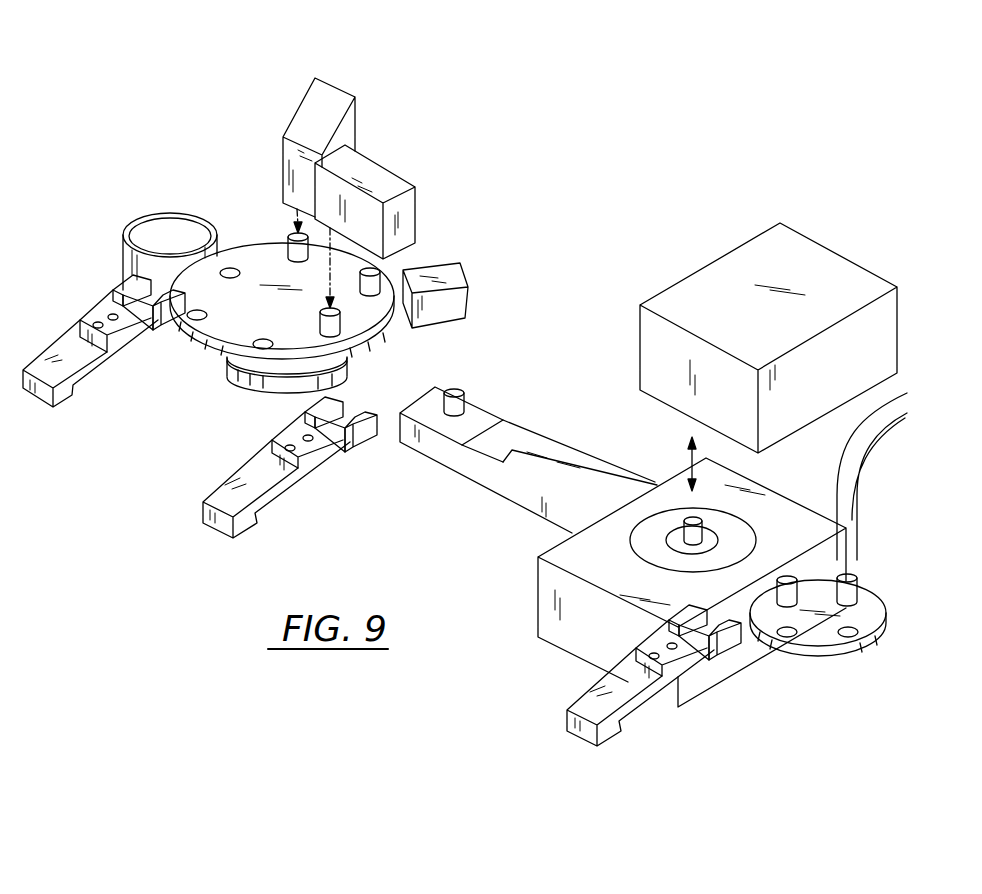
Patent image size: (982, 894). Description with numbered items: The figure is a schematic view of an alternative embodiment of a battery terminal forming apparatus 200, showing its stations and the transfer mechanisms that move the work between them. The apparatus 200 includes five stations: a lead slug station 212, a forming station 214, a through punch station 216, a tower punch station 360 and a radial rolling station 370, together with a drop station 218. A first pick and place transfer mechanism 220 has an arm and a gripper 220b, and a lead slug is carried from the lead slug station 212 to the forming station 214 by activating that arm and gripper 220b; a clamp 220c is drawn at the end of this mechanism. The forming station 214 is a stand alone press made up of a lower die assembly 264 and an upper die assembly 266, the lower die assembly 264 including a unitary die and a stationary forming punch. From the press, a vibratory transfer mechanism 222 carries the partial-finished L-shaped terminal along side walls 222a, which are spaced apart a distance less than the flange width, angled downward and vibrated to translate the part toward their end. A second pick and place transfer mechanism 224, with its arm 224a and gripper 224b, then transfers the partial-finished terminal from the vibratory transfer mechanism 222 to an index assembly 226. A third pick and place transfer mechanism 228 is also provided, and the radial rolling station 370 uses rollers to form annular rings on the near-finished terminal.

The battery terminal forming apparatus 200 is at (690, 80).
The lead slug station 212 is at (853, 663).
The forming station 214 is at (734, 346).
The through punch station 216 is at (378, 178).
The drop station 218 is at (155, 212).
The first pick and place transfer mechanism 220 is at (678, 710).
The gripper 220b is at (621, 716).
The arm clamp 220c is at (735, 645).
The vibratory transfer mechanism 222 is at (528, 460).
The side walls 222a is at (533, 433).
The second pick and place transfer mechanism 224 is at (278, 492).
The arm 224a is at (368, 438).
The gripper 224b is at (223, 496).
The index assembly 226 is at (200, 358).
The third pick and place transfer mechanism 228 is at (75, 402).
The lower die assembly 264 is at (537, 606).
The upper die assembly 266 is at (645, 330).
The tower punch station 360 is at (443, 275).
The radial rolling station 370 is at (320, 112).